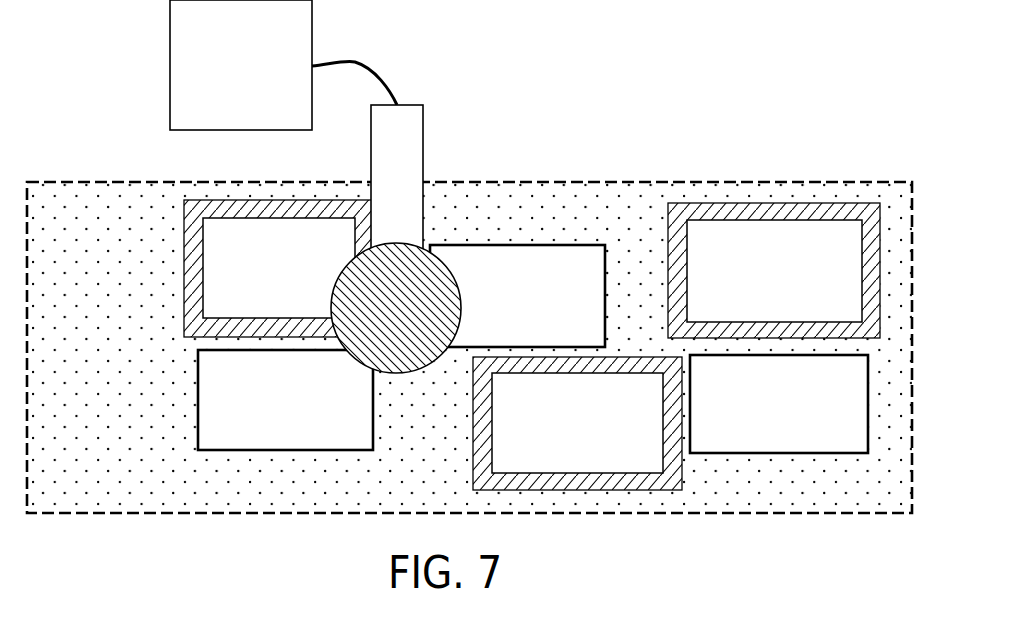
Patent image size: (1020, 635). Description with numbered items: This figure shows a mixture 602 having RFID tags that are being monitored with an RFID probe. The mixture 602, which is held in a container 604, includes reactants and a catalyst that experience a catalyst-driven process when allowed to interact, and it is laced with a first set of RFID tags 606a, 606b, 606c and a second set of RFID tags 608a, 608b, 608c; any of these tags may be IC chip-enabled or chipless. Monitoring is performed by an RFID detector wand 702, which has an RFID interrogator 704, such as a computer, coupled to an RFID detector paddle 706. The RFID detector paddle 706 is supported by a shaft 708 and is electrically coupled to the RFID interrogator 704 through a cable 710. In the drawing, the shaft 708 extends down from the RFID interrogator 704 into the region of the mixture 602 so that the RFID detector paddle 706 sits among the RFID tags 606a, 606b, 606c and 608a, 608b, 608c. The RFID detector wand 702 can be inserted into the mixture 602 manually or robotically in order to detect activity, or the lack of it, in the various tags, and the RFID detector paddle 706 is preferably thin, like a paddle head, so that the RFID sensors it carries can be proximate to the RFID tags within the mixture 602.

The mixture 602 is at (59, 354).
The container 604 is at (858, 181).
The RFID tag 606a is at (248, 434).
The RFID tag 606b is at (482, 330).
The RFID tag 606c is at (741, 438).
The RFID tag 608a is at (250, 302).
The RFID tag 608b is at (540, 457).
The RFID tag 608c is at (736, 304).
The RFID detector wand 702 is at (355, 217).
The RFID interrogator 704 is at (214, 103).
The RFID detector paddle 706 is at (407, 373).
The shaft 708 is at (423, 150).
The cable 710 is at (360, 63).